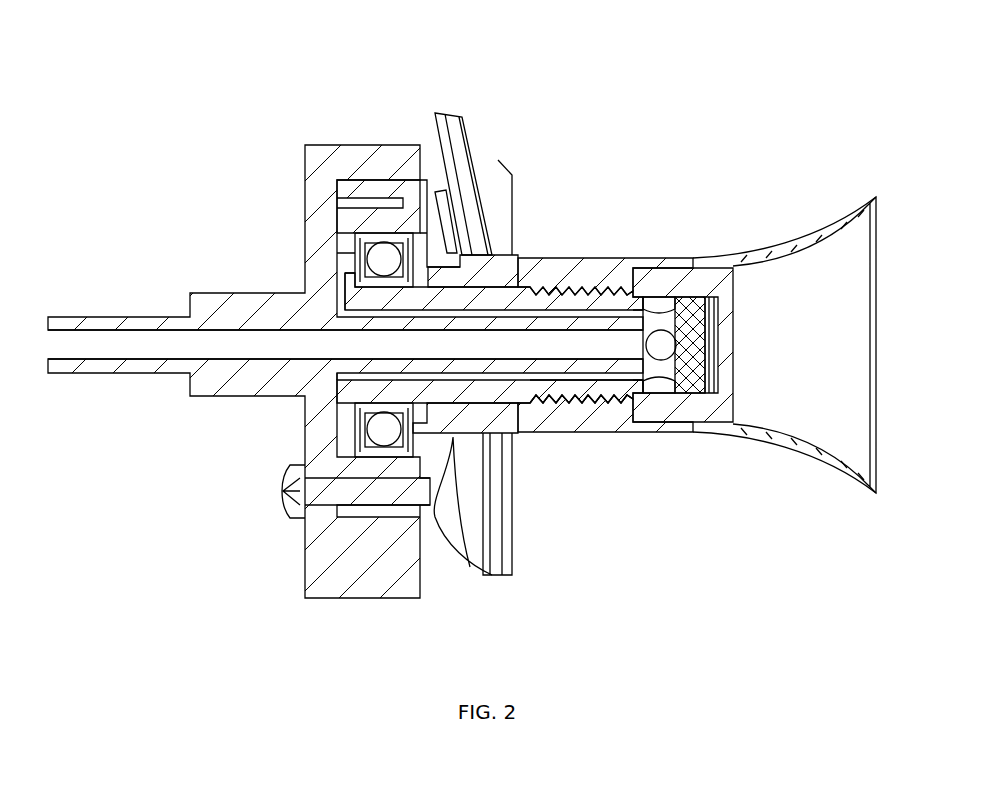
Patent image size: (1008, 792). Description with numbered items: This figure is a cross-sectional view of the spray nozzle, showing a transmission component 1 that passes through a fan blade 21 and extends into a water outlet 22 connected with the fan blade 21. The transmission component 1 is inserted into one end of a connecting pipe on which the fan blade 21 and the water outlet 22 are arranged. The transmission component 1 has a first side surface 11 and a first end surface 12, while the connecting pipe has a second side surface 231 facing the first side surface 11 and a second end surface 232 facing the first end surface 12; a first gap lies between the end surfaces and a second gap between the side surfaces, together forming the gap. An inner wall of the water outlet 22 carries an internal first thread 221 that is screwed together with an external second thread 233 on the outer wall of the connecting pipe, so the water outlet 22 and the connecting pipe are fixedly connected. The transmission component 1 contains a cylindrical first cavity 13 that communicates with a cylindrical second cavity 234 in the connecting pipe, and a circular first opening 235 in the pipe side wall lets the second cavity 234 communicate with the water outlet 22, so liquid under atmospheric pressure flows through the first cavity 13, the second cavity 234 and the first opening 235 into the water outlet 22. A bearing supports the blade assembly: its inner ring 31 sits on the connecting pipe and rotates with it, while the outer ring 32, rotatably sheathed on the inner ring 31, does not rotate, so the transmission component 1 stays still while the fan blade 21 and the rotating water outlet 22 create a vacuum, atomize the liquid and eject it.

The transmission component 1 is at (237, 293).
The first side surface 11 is at (532, 407).
The first end surface 12 is at (643, 377).
The first cavity 13 is at (140, 345).
The fan blade 21 is at (487, 170).
The water outlet 22 is at (817, 237).
The first thread 221 is at (613, 297).
The second side surface 231 is at (640, 300).
The second end surface 232 is at (675, 313).
The second thread 233 is at (593, 397).
The second cavity 234 is at (613, 377).
The first opening 235 is at (672, 355).
The inner ring 31 is at (385, 400).
The outer ring 32 is at (373, 232).